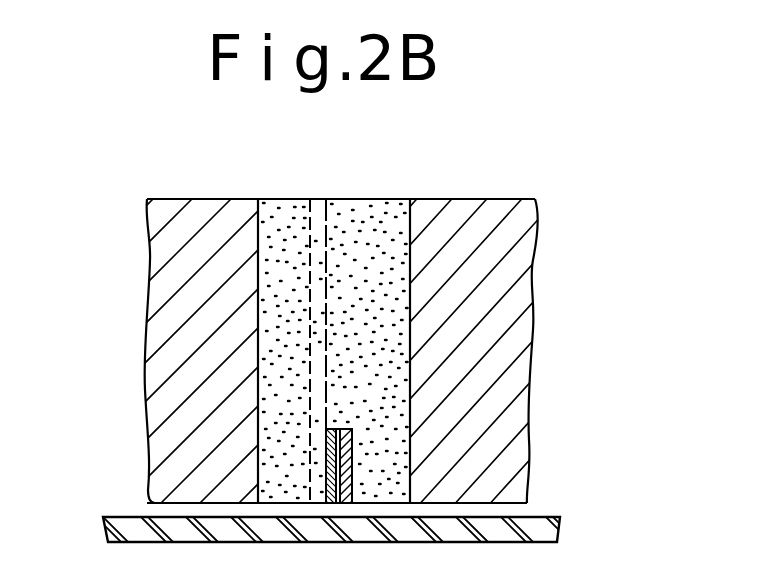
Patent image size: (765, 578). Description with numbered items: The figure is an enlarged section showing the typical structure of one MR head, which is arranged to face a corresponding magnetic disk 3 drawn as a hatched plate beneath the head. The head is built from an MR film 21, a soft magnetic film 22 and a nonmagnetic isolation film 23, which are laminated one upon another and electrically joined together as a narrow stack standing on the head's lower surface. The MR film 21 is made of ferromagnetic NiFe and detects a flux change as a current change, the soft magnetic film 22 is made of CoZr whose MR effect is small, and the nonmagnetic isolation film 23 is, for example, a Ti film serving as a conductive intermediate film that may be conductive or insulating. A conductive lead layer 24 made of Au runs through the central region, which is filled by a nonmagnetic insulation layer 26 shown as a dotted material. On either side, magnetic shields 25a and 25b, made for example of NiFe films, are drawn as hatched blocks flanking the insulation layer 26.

The magnetic disk 3 is at (561, 522).
The MR film 21 is at (329, 428).
The soft magnetic film 22 is at (352, 460).
The nonmagnetic isolation film 23 is at (337, 430).
The conductive lead layer 24 is at (318, 202).
The magnetic shield 25a is at (517, 275).
The magnetic shield 25b is at (158, 259).
The nonmagnetic insulation layer 26 is at (382, 213).